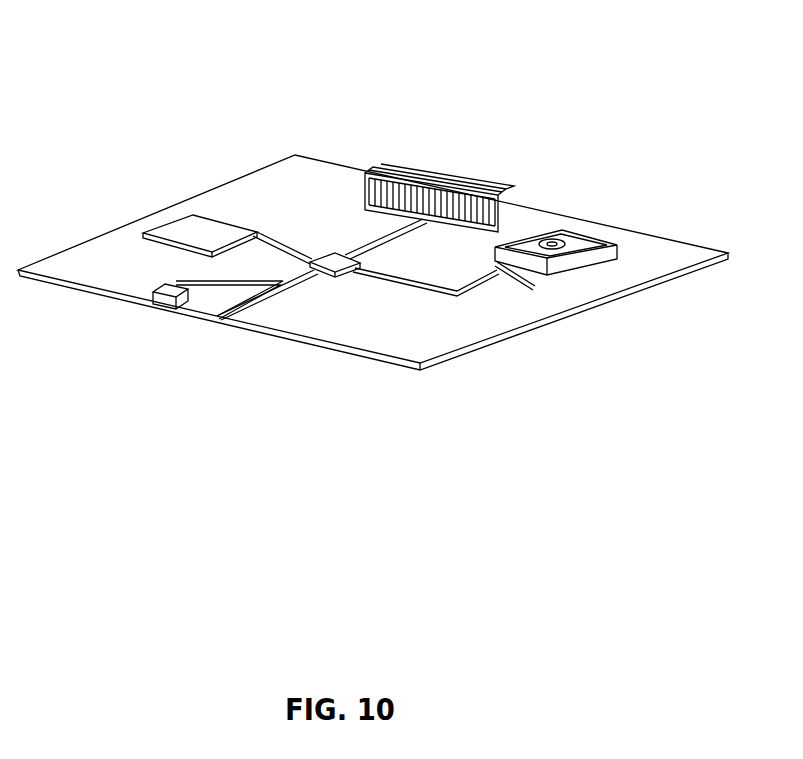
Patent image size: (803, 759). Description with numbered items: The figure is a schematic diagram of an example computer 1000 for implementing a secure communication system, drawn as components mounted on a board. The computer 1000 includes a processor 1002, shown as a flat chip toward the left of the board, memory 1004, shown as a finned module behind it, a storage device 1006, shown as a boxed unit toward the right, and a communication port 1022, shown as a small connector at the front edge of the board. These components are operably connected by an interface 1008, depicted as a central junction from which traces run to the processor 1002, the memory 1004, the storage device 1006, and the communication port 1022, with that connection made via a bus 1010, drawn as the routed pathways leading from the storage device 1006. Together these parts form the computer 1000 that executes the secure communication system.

The computer 1000 is at (530, 92).
The processor 1002 is at (177, 230).
The memory 1004 is at (423, 170).
The storage device 1006 is at (617, 259).
The interface 1008 is at (340, 272).
The bus 1010 is at (530, 287).
The communication port 1022 is at (160, 305).